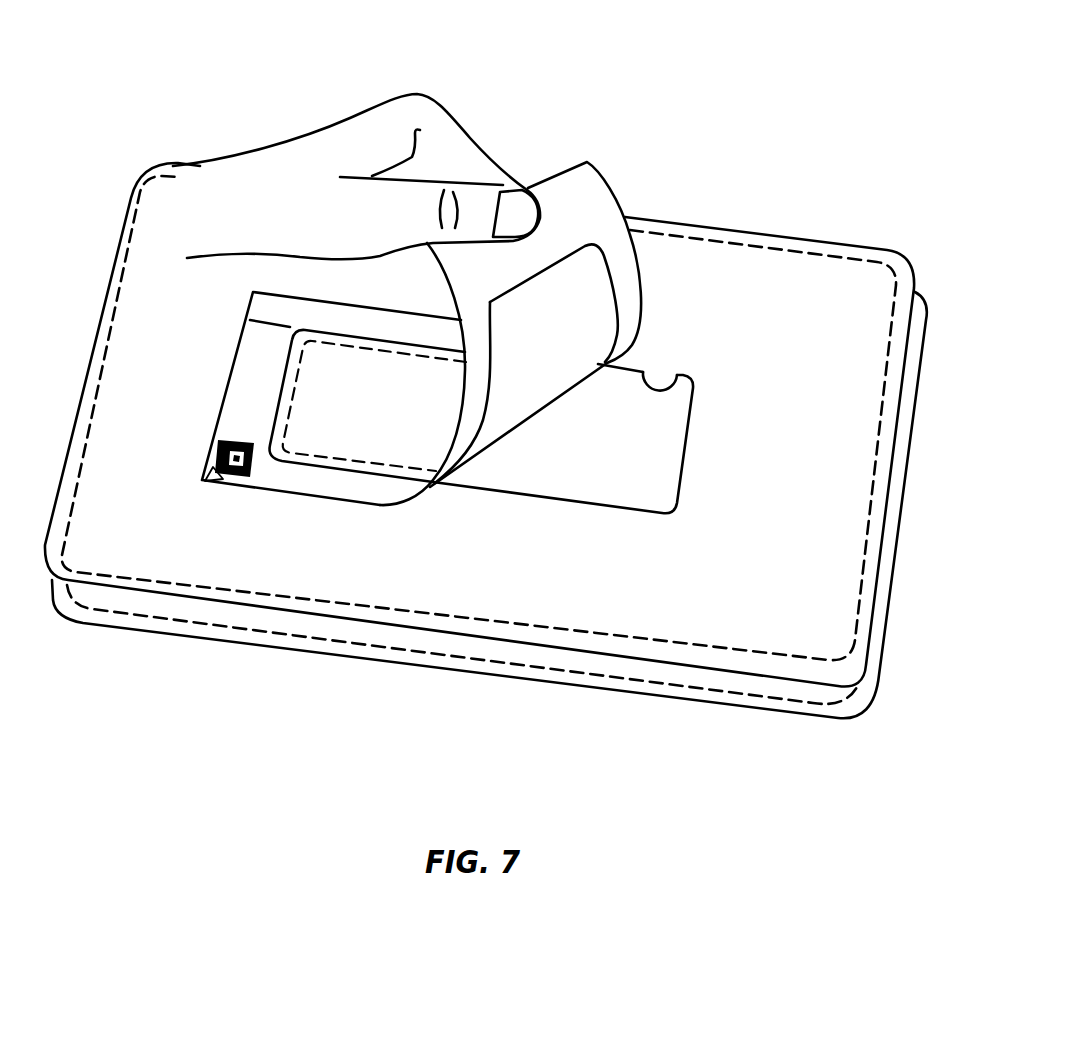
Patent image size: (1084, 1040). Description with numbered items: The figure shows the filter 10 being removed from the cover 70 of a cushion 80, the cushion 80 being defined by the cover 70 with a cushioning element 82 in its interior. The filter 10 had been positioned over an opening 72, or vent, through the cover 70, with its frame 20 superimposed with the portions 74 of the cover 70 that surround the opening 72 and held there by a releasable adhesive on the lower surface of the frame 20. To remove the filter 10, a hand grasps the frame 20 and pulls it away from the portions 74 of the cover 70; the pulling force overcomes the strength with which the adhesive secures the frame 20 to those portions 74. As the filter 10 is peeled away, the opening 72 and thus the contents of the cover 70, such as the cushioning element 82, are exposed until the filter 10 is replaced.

The filter 10 is at (598, 152).
The frame 20 is at (639, 264).
The cover 70 is at (860, 307).
The opening 72 is at (687, 377).
The portions of the cover 74 is at (695, 463).
The cushion 80 is at (897, 218).
The cushioning element 82 is at (812, 244).